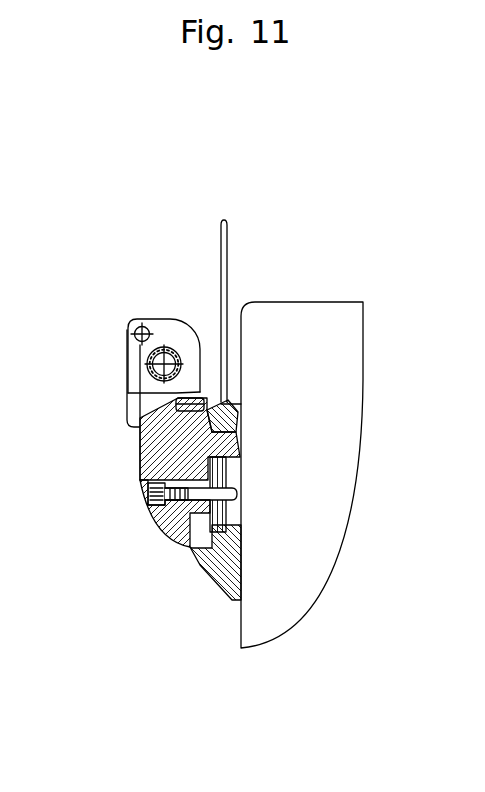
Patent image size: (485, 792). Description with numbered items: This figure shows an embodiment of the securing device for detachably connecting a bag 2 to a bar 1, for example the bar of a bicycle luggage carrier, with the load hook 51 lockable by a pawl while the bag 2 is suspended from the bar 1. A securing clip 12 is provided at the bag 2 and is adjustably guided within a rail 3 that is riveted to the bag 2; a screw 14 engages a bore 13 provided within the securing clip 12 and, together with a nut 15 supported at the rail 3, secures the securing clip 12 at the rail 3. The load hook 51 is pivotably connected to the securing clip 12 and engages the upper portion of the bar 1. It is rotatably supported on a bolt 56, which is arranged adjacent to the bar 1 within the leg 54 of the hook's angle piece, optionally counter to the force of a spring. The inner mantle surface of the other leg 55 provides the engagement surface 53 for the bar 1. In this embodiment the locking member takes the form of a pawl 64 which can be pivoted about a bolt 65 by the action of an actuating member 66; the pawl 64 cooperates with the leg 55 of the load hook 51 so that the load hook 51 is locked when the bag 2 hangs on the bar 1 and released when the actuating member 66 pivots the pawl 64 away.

The bar 1 is at (143, 396).
The bag 2 is at (318, 300).
The rail 3 is at (214, 572).
The securing clip 12 is at (138, 455).
The bore 13 is at (157, 523).
The screw 14 is at (146, 491).
The nut 15 is at (226, 522).
The load hook 51 is at (164, 315).
The engagement surface 53 is at (149, 378).
The leg 54 is at (131, 404).
The leg 55 is at (190, 398).
The bolt 56 is at (142, 326).
The pawl 64 is at (241, 431).
The bolt 65 is at (212, 398).
The actuating member 66 is at (219, 231).